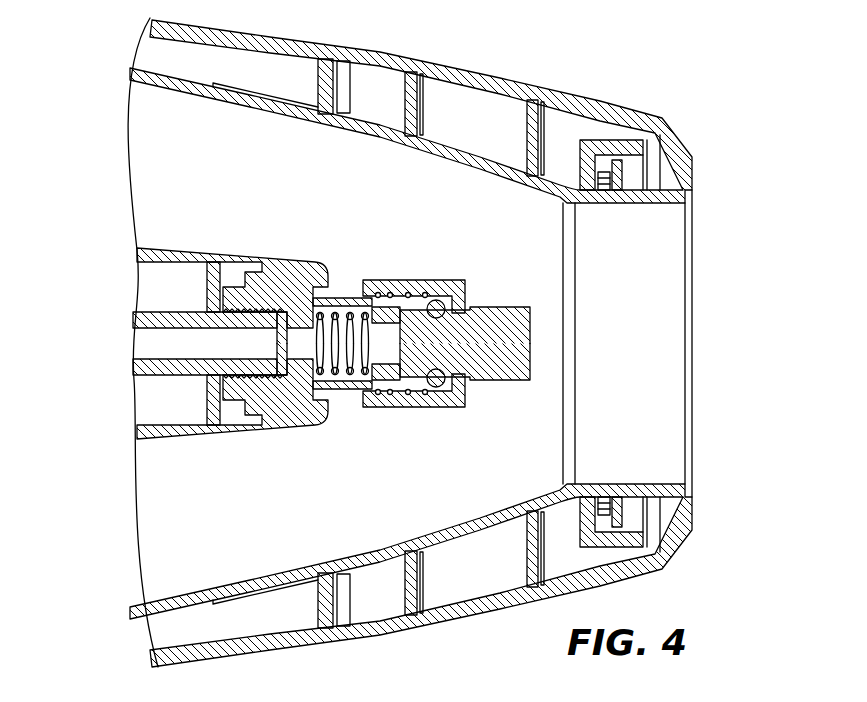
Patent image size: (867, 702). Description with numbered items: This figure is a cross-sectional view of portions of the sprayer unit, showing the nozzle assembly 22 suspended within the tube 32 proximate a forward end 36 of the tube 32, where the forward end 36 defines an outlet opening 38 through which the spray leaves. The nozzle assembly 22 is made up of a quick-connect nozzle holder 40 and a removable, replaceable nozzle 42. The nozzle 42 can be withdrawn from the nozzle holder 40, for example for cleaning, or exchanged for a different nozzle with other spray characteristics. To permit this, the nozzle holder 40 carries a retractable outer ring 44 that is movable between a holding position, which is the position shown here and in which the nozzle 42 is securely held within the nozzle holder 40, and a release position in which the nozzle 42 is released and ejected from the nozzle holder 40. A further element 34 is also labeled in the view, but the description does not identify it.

The nozzle assembly 22 is at (468, 213).
The tube 32 is at (398, 53).
The hub flow passage 34 is at (237, 523).
The forward end 36 is at (630, 102).
The outlet opening 38 is at (660, 347).
The quick-connect nozzle holder 40 is at (393, 262).
The nozzle 42 is at (500, 378).
The retractable outer ring 44 is at (383, 403).